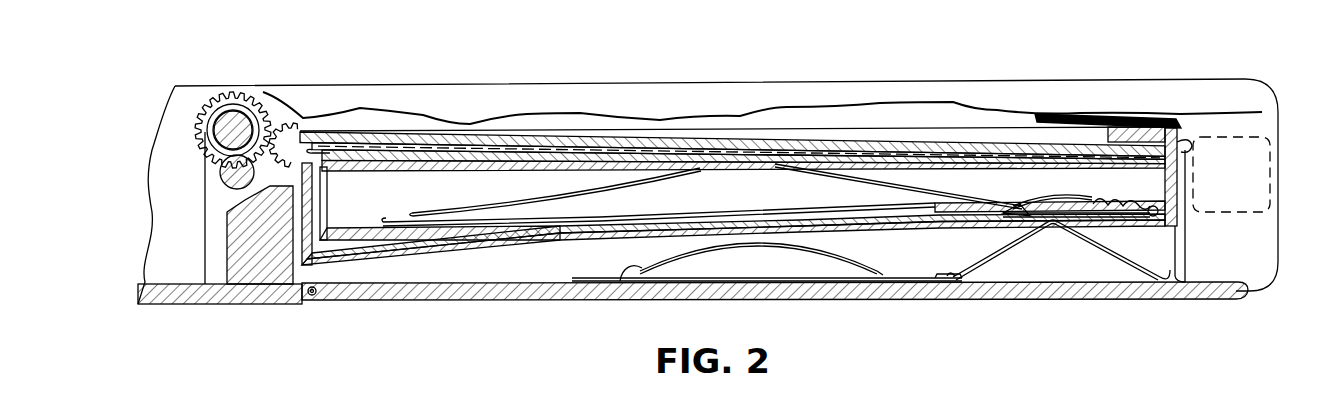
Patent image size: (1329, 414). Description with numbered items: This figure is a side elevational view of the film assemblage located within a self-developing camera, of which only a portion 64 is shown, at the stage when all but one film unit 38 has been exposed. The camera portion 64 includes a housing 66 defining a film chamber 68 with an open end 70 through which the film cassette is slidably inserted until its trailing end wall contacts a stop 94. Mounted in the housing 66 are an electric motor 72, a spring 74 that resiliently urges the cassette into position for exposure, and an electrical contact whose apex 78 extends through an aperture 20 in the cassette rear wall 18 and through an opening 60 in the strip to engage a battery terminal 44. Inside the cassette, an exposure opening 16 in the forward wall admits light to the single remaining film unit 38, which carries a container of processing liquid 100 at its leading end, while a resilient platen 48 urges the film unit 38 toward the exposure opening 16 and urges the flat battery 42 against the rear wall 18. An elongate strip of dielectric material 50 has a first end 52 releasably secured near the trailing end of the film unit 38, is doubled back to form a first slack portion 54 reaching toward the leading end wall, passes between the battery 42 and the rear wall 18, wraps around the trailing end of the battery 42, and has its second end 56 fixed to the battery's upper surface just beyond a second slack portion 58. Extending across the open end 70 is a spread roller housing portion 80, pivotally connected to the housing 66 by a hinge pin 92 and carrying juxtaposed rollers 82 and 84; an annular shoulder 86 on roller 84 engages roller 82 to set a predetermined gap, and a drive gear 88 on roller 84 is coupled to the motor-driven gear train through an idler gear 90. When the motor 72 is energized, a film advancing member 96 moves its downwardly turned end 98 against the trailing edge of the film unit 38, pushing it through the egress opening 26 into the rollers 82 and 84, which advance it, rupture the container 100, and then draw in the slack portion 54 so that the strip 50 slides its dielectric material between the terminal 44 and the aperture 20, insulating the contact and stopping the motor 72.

The exposure opening 16 is at (527, 130).
The rear wall 18 is at (556, 242).
The aperture 20 is at (1105, 228).
The egress opening 26 is at (260, 235).
The film unit 38 is at (650, 150).
The battery 42 is at (830, 208).
The battery terminal 44 is at (1025, 210).
The resilient platen 48 is at (605, 183).
The elongate strip of dielectric material 50 is at (333, 193).
The first end 52 is at (1195, 152).
The first slack portion 54 is at (760, 167).
The second end 56 is at (1090, 200).
The second slack portion 58 is at (1125, 203).
The opening 60 is at (1028, 228).
The camera portion 64 is at (478, 78).
The housing 66 is at (1248, 255).
The film chamber 68 is at (472, 258).
The open end 70 is at (292, 237).
The electric motor 72 is at (1270, 142).
The spring 74 is at (620, 283).
The apex 78 is at (1057, 223).
The spread roller housing portion 80 is at (222, 303).
The roller 82 is at (224, 172).
The roller 84 is at (226, 128).
The annular shoulder 86 is at (212, 147).
The drive gear 88 is at (250, 91).
The idler gear 90 is at (304, 121).
The hinge pin 92 is at (315, 296).
The stop 94 is at (1180, 220).
The film advancing member 96 is at (1068, 112).
The downwardly turned end 98 is at (1185, 142).
The container of processing liquid 100 is at (408, 171).